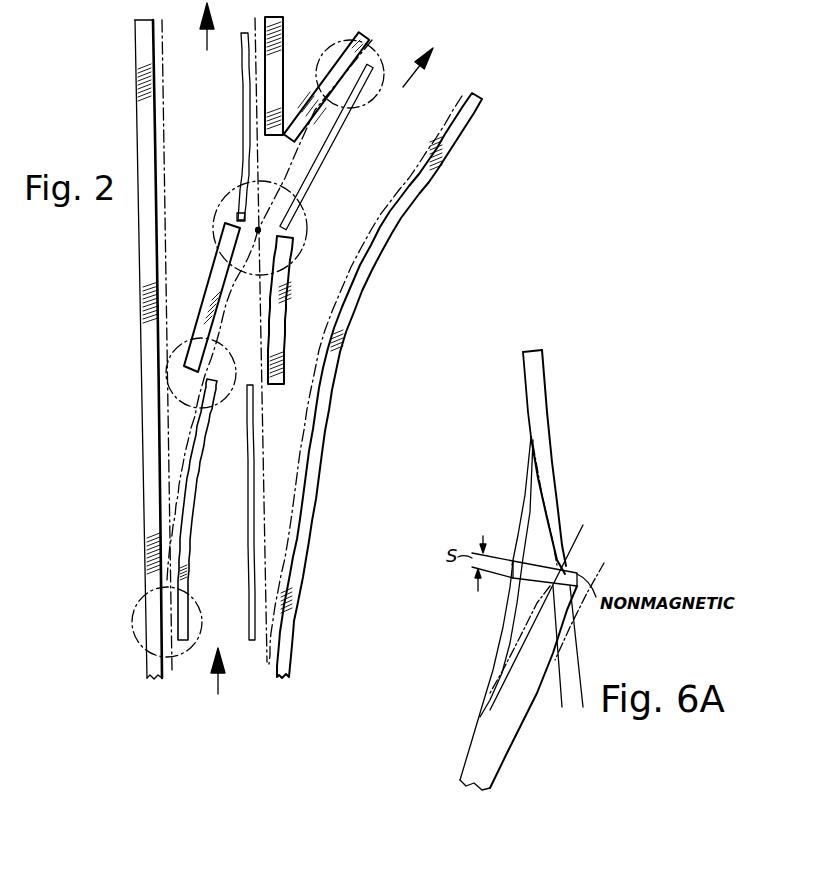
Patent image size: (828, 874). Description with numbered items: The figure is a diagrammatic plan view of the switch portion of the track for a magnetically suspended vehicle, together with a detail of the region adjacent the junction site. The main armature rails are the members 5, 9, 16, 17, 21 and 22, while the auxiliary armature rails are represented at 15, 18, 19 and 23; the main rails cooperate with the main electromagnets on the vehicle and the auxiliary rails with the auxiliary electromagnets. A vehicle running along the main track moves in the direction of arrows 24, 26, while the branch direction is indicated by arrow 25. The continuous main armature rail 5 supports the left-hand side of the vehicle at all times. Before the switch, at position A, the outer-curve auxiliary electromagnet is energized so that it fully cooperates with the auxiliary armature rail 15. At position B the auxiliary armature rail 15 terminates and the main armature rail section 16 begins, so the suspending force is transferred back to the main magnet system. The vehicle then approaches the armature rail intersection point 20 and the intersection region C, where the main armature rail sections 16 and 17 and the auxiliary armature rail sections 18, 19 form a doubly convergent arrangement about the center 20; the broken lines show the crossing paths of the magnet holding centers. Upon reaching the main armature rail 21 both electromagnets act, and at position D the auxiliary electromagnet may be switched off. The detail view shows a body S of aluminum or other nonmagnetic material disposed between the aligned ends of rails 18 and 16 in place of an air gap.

In FIG. 2, the main armature rail 5 is at (152, 433).
In FIG. 2, the main armature rail 9 is at (285, 660).
In FIG. 2, the auxiliary armature rail 15 is at (190, 503).
In FIG. 2, the main armature rail section 16 is at (219, 289).
In FIG. 6A, the main armature rail section 16 is at (507, 733).
In FIG. 2, the main armature rail section 17 is at (272, 317).
In FIG. 2, the auxiliary armature rail section 18 is at (246, 128).
In FIG. 6A, the auxiliary armature rail section 18 is at (543, 413).
In FIG. 2, the auxiliary armature rail section 19 is at (327, 132).
In FIG. 2, the armature rail intersection point 20 is at (258, 230).
In FIG. 2, the main armature rail 21 is at (313, 104).
In FIG. 2, the main armature rail 22 is at (276, 80).
In FIG. 2, the auxiliary armature rail 23 is at (252, 543).
In FIG. 2, the arrow 24 is at (222, 685).
In FIG. 2, the arrow 25 is at (412, 80).
In FIG. 2, the arrow 26 is at (207, 42).
In FIG. 2, the position A is at (146, 596).
In FIG. 2, the position B is at (180, 346).
In FIG. 2, the rail-junction site C is at (311, 249).
In FIG. 2, the position D is at (326, 52).